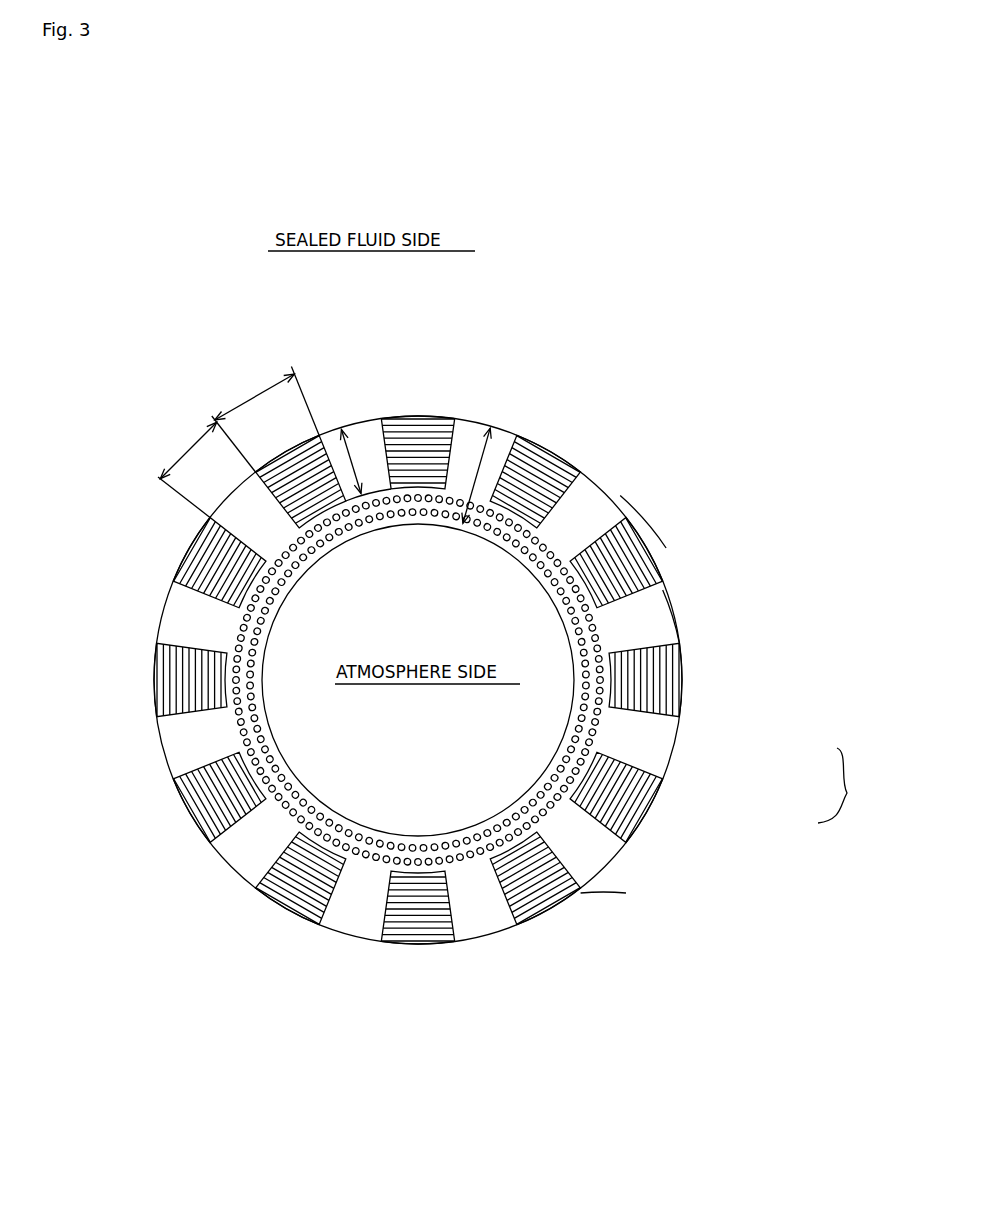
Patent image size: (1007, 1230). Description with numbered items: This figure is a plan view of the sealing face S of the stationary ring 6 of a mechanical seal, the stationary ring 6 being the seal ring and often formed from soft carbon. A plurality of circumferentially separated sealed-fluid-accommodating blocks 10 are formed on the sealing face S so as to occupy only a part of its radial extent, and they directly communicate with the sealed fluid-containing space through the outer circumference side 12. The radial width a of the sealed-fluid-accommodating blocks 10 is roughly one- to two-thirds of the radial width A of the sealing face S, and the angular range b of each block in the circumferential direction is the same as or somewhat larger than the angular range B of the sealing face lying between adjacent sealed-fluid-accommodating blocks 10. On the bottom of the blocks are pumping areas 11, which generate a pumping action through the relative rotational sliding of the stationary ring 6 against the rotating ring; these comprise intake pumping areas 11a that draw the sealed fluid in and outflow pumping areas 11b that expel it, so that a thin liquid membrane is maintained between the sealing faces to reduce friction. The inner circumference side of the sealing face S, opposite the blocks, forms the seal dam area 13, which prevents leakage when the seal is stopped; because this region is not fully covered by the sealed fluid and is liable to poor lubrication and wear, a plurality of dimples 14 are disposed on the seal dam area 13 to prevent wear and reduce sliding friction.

The stationary ring 6 is at (467, 416).
The sealed-fluid-accommodating block 10 is at (683, 667).
The pumping area 11 is at (853, 785).
The intake pumping area 11a is at (540, 470).
The outflow pumping area 11b is at (415, 430).
The outer circumference side 12 is at (682, 672).
The seal dam area 13 is at (427, 513).
The dimple 14 is at (572, 632).
The sealing face S is at (603, 492).
The width of the radial direction of the sealed-fluid-accommodating blocks a is at (366, 466).
The width of the radial direction of the sealing face A is at (480, 475).
The angular range of the sealed-fluid-accommodating blocks b is at (265, 417).
The angular range of the sealing faces between adjacent blocks B is at (187, 467).